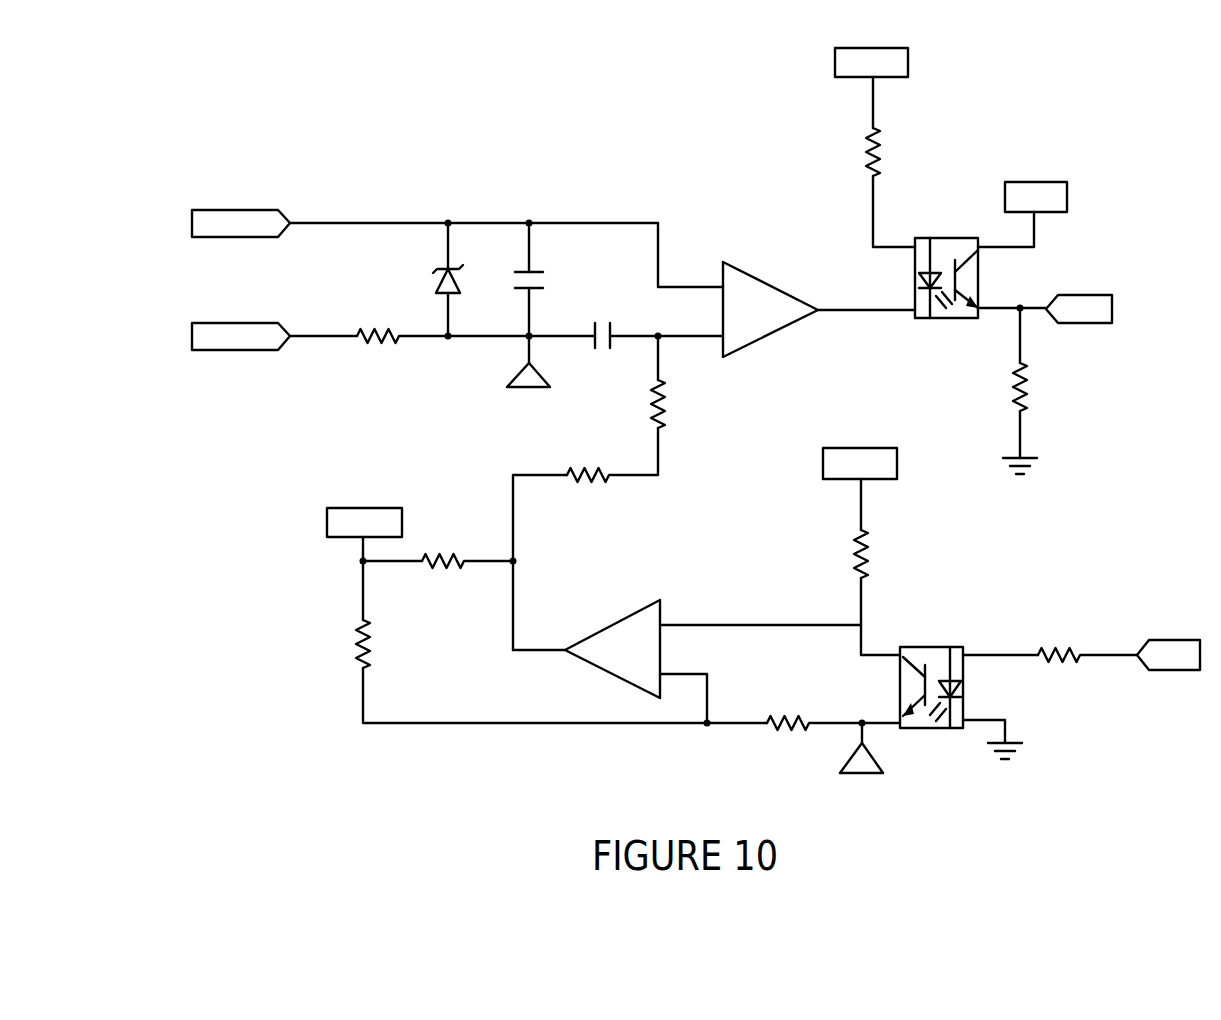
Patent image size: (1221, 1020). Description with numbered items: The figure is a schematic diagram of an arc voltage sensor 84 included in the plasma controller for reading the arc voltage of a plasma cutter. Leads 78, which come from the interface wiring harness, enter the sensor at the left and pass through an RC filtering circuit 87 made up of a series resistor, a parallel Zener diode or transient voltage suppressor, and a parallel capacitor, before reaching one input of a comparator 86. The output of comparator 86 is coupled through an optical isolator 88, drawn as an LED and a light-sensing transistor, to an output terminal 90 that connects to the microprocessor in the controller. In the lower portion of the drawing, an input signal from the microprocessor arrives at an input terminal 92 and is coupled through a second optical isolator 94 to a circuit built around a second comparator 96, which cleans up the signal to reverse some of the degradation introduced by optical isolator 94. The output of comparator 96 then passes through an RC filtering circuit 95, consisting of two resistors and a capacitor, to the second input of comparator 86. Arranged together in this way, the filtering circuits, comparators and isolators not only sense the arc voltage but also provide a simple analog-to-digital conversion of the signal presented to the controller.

The arc voltage sensor 84 is at (670, 124).
The RC filtering circuit 87 is at (478, 208).
The leads 78 is at (240, 237).
The comparator 86 is at (753, 290).
The optical isolator 88 is at (941, 324).
The output terminal 90 is at (1097, 295).
The RC filtering circuit 95 is at (681, 462).
The second comparator 96 is at (612, 630).
The optical isolator 94 is at (928, 730).
The input terminal 92 is at (1155, 672).